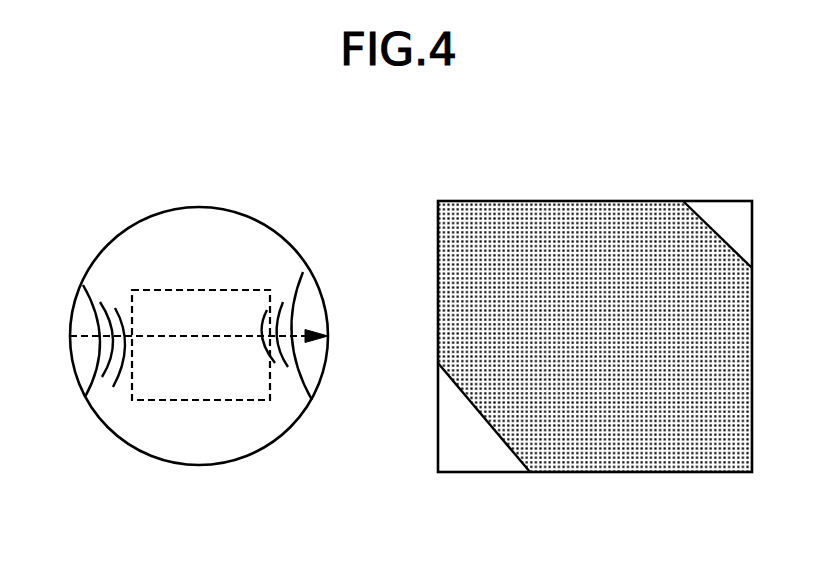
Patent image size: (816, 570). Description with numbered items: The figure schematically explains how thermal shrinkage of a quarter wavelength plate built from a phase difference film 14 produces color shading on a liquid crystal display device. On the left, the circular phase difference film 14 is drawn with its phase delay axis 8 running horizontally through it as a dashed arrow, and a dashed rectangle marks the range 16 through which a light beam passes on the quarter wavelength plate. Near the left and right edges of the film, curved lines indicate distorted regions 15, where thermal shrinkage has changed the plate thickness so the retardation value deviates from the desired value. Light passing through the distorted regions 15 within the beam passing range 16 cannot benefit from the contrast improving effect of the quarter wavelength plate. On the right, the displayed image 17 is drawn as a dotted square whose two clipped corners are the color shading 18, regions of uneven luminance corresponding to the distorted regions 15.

The phase delay axis 8 is at (87, 336).
The phase difference film 14 is at (122, 248).
The distorted regions 15 is at (102, 377).
The range through which a light beam passes 16 is at (197, 299).
The displayed image 17 is at (533, 207).
The color shading 18 is at (723, 208).